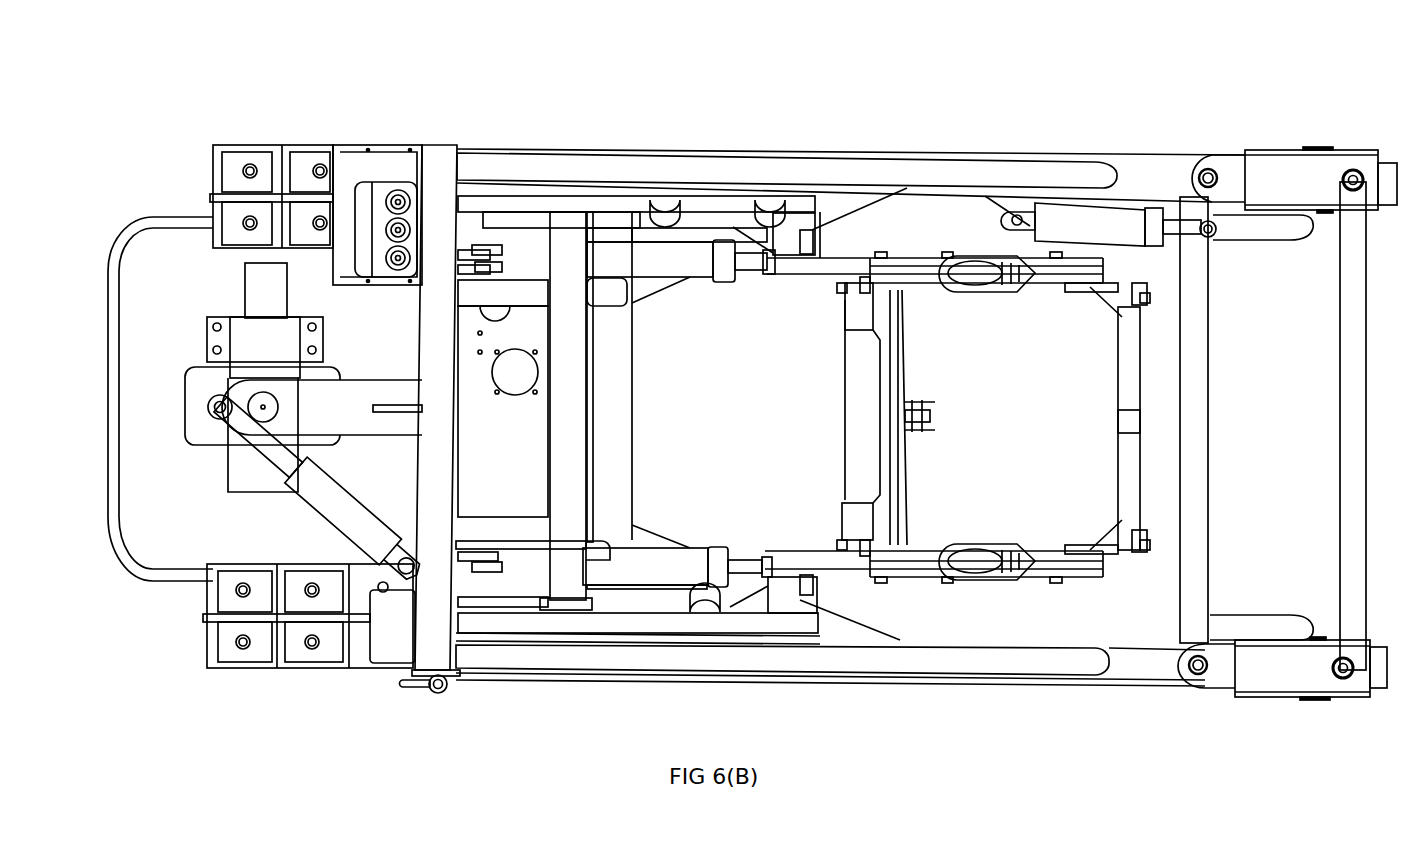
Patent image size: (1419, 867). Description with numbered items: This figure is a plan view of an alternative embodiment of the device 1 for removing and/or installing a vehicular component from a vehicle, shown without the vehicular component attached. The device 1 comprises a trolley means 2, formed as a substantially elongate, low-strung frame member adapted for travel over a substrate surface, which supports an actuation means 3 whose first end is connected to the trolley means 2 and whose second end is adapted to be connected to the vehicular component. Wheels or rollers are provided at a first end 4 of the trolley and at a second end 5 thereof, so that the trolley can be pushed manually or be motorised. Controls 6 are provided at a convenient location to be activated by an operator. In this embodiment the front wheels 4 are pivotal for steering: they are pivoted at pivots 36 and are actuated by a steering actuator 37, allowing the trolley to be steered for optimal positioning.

The device 1 is at (650, 707).
The trolley means 2 is at (889, 661).
The actuation means 3 is at (670, 299).
The first end 4 is at (1328, 720).
The second end 5 is at (291, 674).
The controls 6 is at (345, 175).
The pivots 36 is at (1218, 168).
The steering actuator 37 is at (1084, 215).